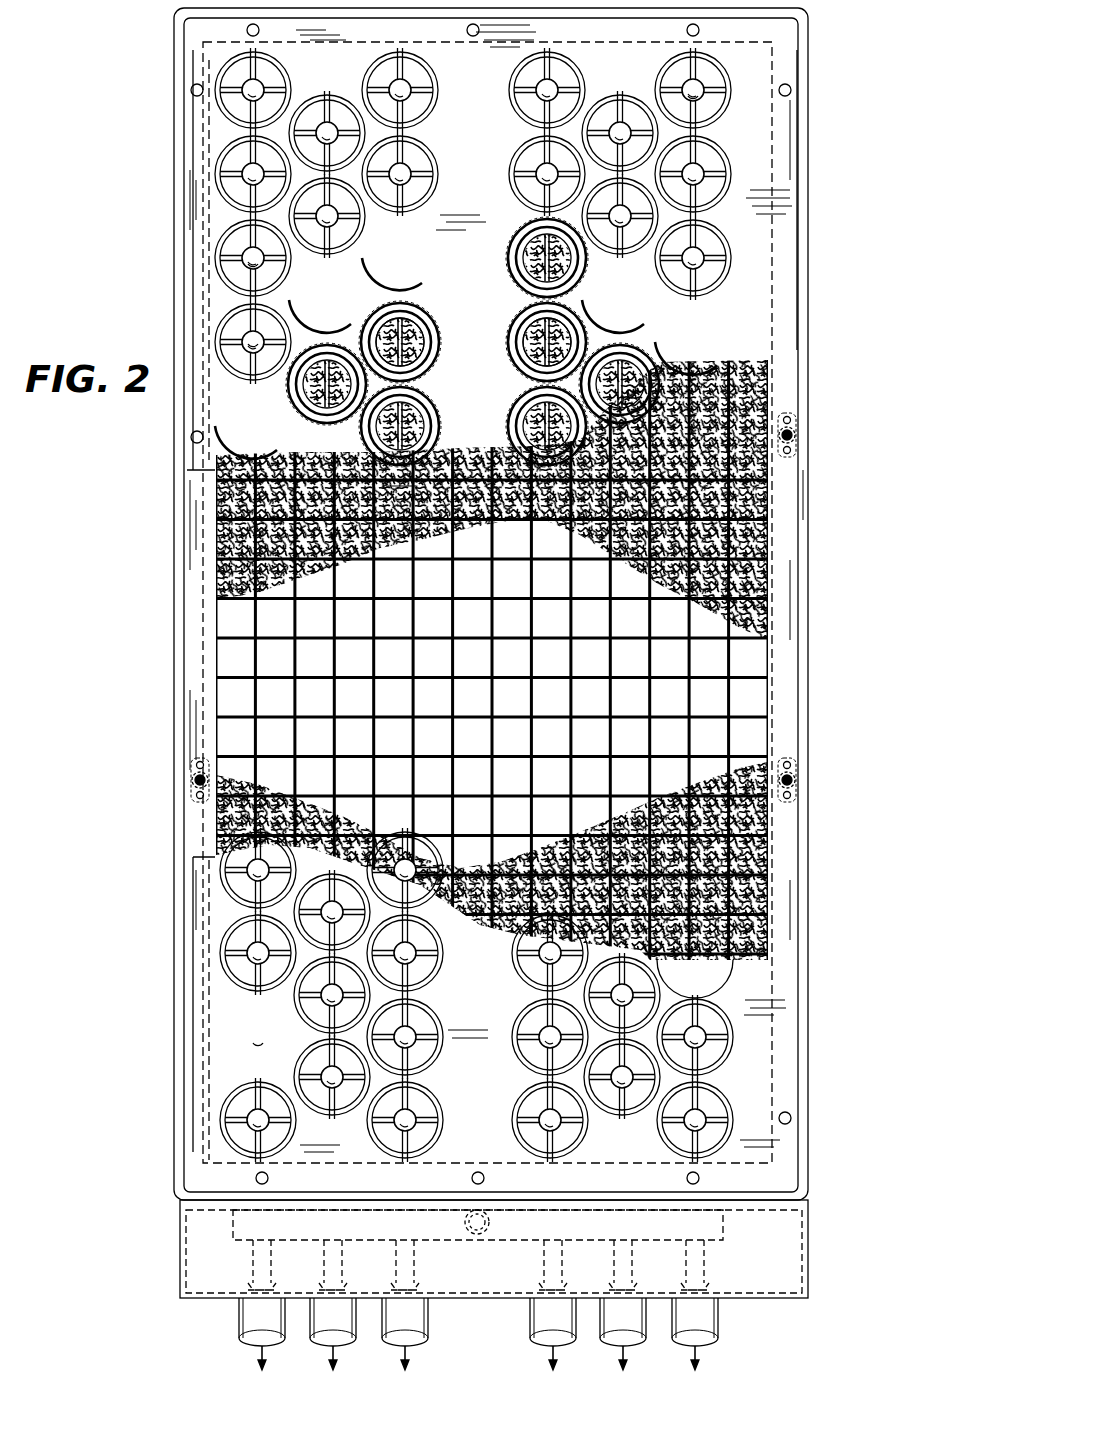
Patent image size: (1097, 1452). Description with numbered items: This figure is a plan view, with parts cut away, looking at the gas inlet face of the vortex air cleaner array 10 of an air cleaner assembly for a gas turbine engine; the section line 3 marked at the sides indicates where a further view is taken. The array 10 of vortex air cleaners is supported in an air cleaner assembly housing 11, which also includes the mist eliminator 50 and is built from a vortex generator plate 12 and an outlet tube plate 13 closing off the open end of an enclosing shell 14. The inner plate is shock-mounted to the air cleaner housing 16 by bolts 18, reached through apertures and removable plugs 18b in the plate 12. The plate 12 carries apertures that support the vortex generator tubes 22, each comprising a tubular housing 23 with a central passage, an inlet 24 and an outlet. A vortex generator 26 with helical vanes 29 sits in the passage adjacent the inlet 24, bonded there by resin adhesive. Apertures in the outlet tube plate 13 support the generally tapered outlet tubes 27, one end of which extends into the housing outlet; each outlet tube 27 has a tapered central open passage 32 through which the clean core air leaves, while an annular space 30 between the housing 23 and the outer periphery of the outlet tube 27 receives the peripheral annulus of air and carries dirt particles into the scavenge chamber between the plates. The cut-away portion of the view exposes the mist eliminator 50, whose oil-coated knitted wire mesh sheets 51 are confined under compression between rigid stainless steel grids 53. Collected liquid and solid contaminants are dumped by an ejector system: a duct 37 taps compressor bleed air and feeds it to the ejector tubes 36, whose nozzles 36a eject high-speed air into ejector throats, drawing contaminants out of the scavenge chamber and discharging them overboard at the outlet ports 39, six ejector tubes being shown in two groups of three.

The array of vortex air cleaners 10 is at (437, 605).
The air cleaner assembly housing 11 is at (812, 106).
The vortex generator plate 12 is at (489, 195).
The outlet tube plate 13 is at (489, 417).
The enclosing shell 14 is at (806, 284).
The air cleaner housing 16 is at (176, 655).
The bolts 18 is at (195, 780).
The removable plugs 18b is at (190, 85).
The vortex generator tubes 22 is at (205, 150).
The tubular housing 23 is at (530, 300).
The inlet 24 is at (234, 243).
The vortex generator 26 is at (253, 338).
The outlet tubes 27 is at (512, 258).
The vanes 29 is at (719, 263).
The annular space 30 is at (524, 353).
The tapered central open passage 32 is at (515, 435).
The ejector tubes 36 is at (232, 1222).
The nozzles 36a is at (250, 1256).
The duct 37 is at (466, 1236).
The outlet ports 39 is at (428, 1325).
The mist eliminator 50 is at (234, 543).
The knitted wire mesh sheets 51 is at (745, 493).
The rigid grids 53 is at (732, 545).
The section line 3 is at (80, 1046).